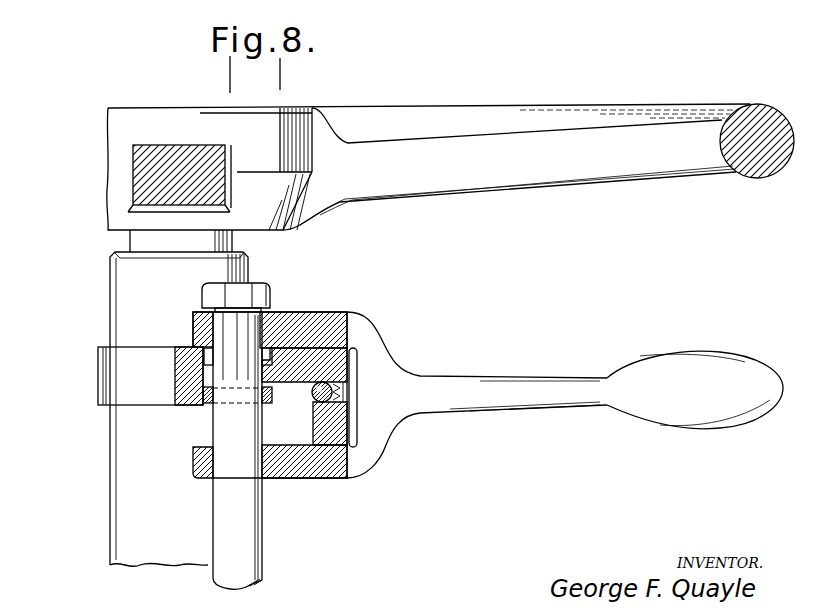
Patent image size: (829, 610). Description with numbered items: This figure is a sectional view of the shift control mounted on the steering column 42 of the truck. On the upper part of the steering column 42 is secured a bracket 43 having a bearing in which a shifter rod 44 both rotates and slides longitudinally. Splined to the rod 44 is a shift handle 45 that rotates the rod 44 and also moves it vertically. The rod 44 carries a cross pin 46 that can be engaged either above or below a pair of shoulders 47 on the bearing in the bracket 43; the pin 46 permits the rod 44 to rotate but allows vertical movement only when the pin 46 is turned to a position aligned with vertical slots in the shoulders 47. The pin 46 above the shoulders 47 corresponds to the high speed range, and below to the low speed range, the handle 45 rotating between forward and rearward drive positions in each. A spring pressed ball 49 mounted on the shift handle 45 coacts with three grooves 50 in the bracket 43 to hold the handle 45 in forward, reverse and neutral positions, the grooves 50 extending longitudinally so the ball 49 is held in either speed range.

The steering column 42 is at (110, 292).
The bracket 43 is at (98, 376).
The shifter rod 44 is at (262, 517).
The shift handle 45 is at (519, 377).
The cross pin 46 is at (210, 407).
The shoulders 47 is at (268, 323).
The spring pressed ball 49 is at (330, 400).
The grooves 50 is at (312, 366).